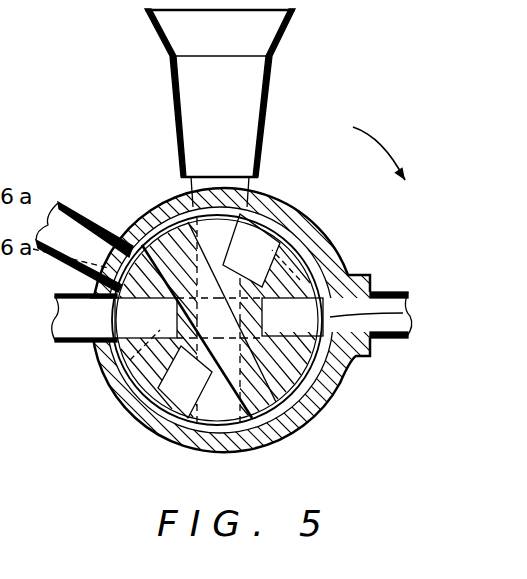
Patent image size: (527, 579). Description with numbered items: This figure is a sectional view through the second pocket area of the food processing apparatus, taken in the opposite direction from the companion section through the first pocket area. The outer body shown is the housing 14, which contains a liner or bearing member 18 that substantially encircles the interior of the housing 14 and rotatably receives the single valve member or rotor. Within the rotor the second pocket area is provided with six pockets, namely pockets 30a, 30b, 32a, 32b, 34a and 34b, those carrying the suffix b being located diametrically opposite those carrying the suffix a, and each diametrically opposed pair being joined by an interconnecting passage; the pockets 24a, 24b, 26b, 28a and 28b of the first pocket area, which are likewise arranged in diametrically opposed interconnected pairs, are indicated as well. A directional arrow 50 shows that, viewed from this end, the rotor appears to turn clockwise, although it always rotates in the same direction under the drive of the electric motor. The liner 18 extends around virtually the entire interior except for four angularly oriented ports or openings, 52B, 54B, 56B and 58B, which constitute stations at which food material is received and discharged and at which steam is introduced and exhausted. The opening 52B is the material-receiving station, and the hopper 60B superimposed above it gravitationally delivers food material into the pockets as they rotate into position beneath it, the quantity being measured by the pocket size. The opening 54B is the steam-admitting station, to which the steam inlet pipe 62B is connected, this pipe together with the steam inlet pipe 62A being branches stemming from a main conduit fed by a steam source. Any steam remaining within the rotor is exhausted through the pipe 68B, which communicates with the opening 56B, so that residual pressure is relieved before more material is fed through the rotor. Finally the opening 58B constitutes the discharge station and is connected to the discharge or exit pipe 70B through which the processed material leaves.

The housing 14 is at (287, 415).
The liner or bearing member 18 is at (220, 305).
The pocket 24a is at (232, 172).
The pocket 24b is at (200, 448).
The pocket 26b is at (322, 400).
The pocket 28a is at (118, 403).
The pocket 28b is at (312, 233).
The pocket 30a is at (163, 200).
The pocket 30b is at (330, 437).
The pocket 32a is at (108, 370).
The pocket 32b is at (322, 282).
The pocket 34a is at (155, 430).
The pocket 34b is at (268, 212).
The directional arrow 50 is at (372, 143).
The port or opening 52B is at (210, 200).
The port or opening 54B is at (92, 296).
The port or opening 56B is at (117, 247).
The port or opening 58B is at (418, 305).
The hopper 60B is at (190, 78).
The steam inlet pipe 62A is at (58, 318).
The steam inlet pipe 62B is at (87, 333).
The exhaust pipe 68B is at (59, 201).
The discharge or exit pipe 70B is at (388, 294).